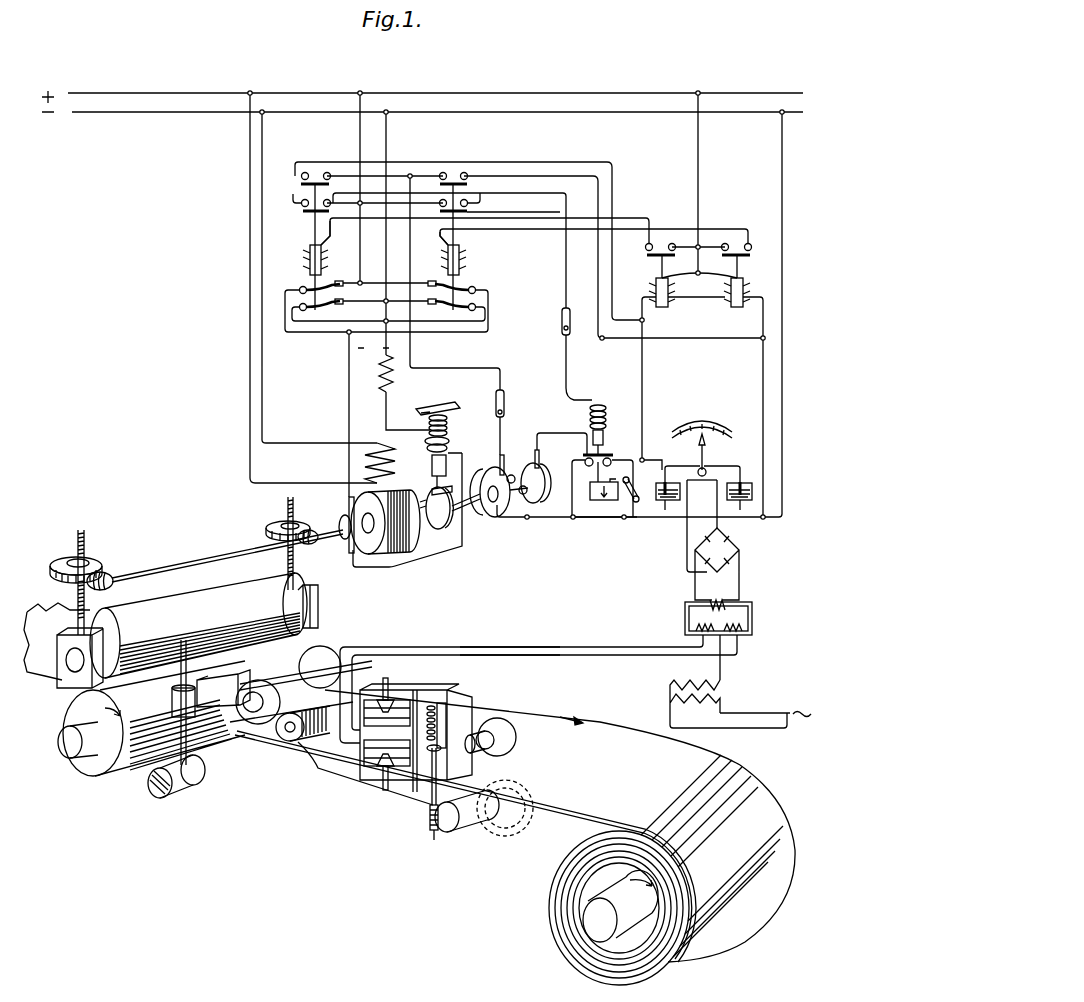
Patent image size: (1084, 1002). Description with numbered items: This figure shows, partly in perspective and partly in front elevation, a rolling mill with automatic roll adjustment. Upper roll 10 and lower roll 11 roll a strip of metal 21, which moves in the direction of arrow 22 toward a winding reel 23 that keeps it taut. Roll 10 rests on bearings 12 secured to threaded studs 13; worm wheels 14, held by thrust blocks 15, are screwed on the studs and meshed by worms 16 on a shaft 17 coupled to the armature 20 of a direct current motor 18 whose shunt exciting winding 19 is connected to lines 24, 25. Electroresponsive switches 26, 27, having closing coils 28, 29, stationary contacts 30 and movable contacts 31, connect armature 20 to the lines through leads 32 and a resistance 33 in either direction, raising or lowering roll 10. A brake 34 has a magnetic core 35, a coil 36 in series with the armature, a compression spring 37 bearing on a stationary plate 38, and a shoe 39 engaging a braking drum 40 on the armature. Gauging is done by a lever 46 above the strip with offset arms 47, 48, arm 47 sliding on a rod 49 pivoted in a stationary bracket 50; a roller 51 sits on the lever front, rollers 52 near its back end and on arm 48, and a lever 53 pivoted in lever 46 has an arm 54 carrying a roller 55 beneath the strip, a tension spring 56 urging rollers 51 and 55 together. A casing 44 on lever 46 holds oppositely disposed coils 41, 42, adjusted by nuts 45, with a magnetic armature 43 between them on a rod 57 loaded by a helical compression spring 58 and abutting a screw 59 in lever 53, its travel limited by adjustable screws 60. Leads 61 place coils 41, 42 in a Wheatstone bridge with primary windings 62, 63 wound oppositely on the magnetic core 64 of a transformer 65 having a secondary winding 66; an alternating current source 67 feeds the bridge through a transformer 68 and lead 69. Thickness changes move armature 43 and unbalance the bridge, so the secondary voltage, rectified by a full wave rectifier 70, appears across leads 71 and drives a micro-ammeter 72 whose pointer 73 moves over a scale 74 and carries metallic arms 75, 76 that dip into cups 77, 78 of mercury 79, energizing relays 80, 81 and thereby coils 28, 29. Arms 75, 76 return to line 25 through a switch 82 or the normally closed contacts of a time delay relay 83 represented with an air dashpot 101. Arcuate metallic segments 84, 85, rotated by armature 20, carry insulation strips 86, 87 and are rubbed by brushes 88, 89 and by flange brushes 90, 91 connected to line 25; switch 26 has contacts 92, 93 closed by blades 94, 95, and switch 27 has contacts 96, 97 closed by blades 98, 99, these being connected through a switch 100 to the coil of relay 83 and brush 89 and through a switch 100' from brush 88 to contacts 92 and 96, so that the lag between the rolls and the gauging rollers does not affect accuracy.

The upper roll 10 is at (198, 625).
The lower roll 11 is at (151, 718).
The bearings 12 is at (335, 598).
The threaded studs 13 is at (280, 497).
The worm wheels 14 is at (270, 527).
The thrust blocks 15 is at (293, 523).
The worms 16 is at (313, 546).
The shaft 17 is at (200, 556).
The direct current motor 18 is at (340, 502).
The shunt exciting winding 19 is at (380, 444).
The armature 20 is at (395, 560).
The strip of metal 21 is at (487, 826).
The arrow 22 is at (572, 715).
The winding reel 23 is at (672, 870).
The line 24 is at (103, 92).
The line 25 is at (85, 113).
The electroresponsive switch 26 is at (294, 259).
The electroresponsive switch 27 is at (492, 259).
The closing coil 28 is at (335, 253).
The closing coil 29 is at (437, 254).
The stationary contacts 30 is at (350, 279).
The movable contacts 31 is at (380, 297).
The leads 32 is at (373, 348).
The resistance 33 is at (381, 390).
The electromagnetically operated brake 34 is at (477, 452).
The magnetic core 35 is at (432, 466).
The coil 36 is at (425, 441).
The compression spring 37 is at (428, 419).
The stationary plate 38 is at (453, 411).
The shoe 39 is at (430, 489).
The braking drum 40 is at (437, 529).
The coil 41 is at (410, 700).
The coil 42 is at (364, 762).
The magnetic armature 43 is at (440, 757).
The casing 44 is at (416, 732).
The nuts 45 is at (389, 695).
The lever 46 is at (298, 714).
The offset arm 47 is at (223, 688).
The offset arm 48 is at (300, 680).
The rod 49 is at (195, 751).
The stationary bracket 50 is at (181, 791).
The circular hardened roller 51 is at (517, 722).
The circular hardened rollers 52 is at (321, 656).
The lever 53 is at (333, 798).
The arm 54 is at (470, 824).
The circular hardened roller 55 is at (512, 823).
The tension spring 56 is at (312, 733).
The rod 57 is at (440, 704).
The helical compression spring 58 is at (448, 710).
The screw 59 is at (433, 841).
The adjustable screws 60 is at (418, 694).
The leads 61 is at (552, 654).
The primary winding 62 is at (704, 618).
The primary winding 63 is at (734, 620).
The magnetic core 64 is at (752, 612).
The transformer 65 is at (678, 620).
The secondary winding 66 is at (723, 598).
The alternating current source 67 is at (765, 718).
The transformer 68 is at (668, 688).
The lead 69 is at (497, 646).
The full wave rectifier 70 is at (735, 549).
The leads 71 is at (709, 531).
The micro-ammeter 72 is at (711, 498).
The indicating pointer 73 is at (706, 450).
The fixed scale 74 is at (732, 431).
The metallic arm 75 is at (668, 467).
The metallic arm 76 is at (739, 472).
The cup 77 is at (665, 502).
The cup 78 is at (746, 499).
The electrically conducting fluid 79 is at (657, 500).
The relay 80 is at (640, 292).
The relay 81 is at (769, 274).
The switch 82 is at (627, 502).
The relay 83 is at (627, 445).
The arcuate metallic segment 84 is at (481, 486).
The arcuate metallic segment 85 is at (546, 501).
The strip of insulation 86 is at (511, 476).
The strip of insulation 87 is at (545, 469).
The stationary brush 88 is at (503, 457).
The stationary brush 89 is at (539, 455).
The stationary brush 90 is at (487, 516).
The stationary brush 91 is at (522, 495).
The contacts 92 is at (326, 173).
The contacts 93 is at (301, 205).
The switch blade 94 is at (300, 185).
The switch blade 95 is at (305, 214).
The contacts 96 is at (463, 173).
The contacts 97 is at (440, 205).
The switch blade 98 is at (469, 186).
The switch blade 99 is at (470, 212).
The switch 100 is at (551, 321).
The switch 100' is at (518, 403).
The air dashpot 101 is at (597, 500).